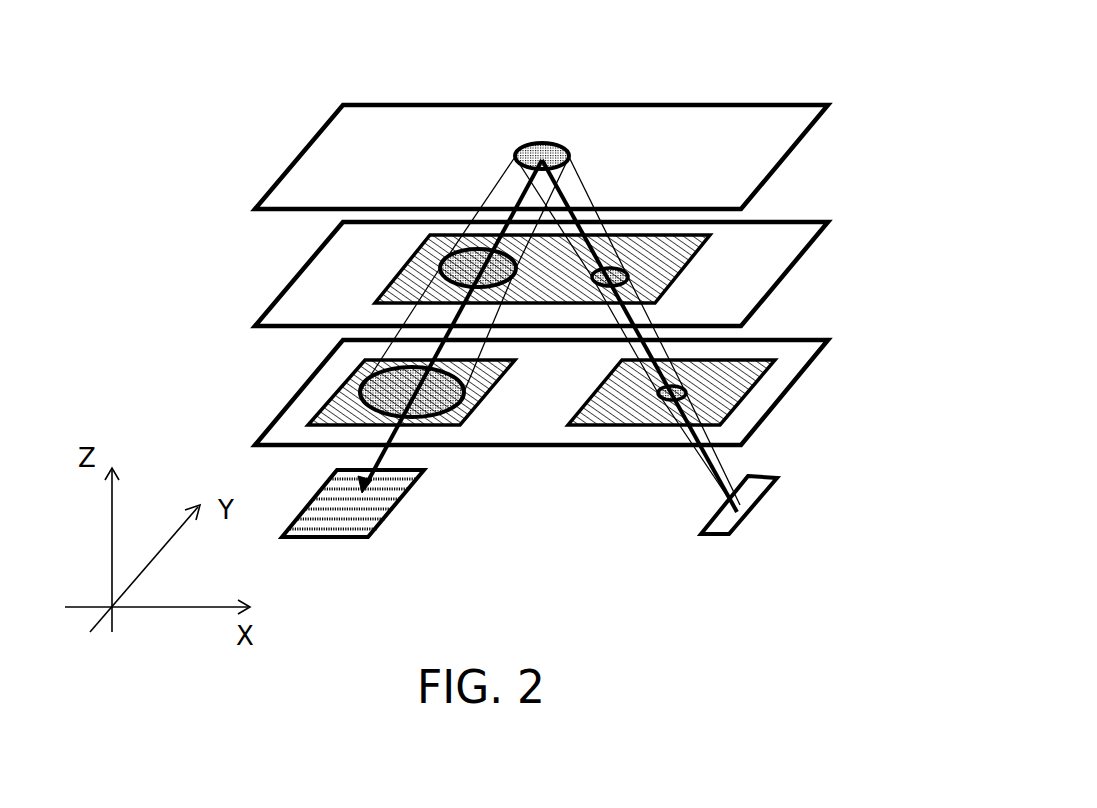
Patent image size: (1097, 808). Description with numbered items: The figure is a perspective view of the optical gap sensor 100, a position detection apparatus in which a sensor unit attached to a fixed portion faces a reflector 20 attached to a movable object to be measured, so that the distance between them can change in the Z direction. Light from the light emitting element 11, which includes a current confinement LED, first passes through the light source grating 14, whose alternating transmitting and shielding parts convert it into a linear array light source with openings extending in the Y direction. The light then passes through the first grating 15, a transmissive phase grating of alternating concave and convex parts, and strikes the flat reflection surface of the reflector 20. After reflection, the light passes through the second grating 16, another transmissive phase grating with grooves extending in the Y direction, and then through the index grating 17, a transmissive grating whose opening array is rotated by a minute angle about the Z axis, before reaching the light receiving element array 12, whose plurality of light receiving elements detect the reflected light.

The optical gap sensor 100 is at (870, 46).
The reflector 20 is at (312, 146).
The second grating 16 is at (398, 268).
The first grating 15 is at (680, 272).
The index grating 17 is at (336, 391).
The light source grating 14 is at (742, 392).
The light receiving element array 12 is at (337, 538).
The light emitting element 11 is at (765, 497).